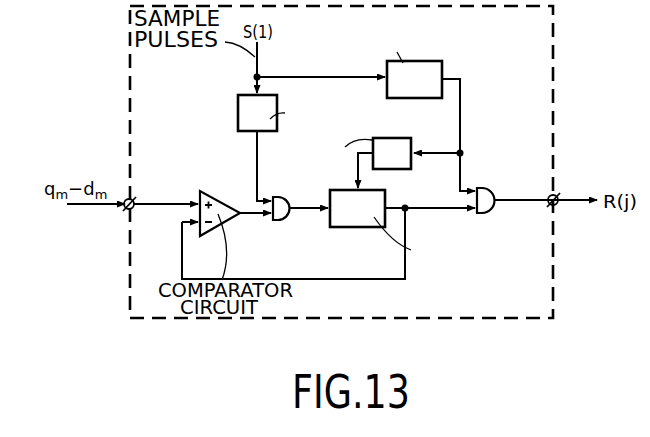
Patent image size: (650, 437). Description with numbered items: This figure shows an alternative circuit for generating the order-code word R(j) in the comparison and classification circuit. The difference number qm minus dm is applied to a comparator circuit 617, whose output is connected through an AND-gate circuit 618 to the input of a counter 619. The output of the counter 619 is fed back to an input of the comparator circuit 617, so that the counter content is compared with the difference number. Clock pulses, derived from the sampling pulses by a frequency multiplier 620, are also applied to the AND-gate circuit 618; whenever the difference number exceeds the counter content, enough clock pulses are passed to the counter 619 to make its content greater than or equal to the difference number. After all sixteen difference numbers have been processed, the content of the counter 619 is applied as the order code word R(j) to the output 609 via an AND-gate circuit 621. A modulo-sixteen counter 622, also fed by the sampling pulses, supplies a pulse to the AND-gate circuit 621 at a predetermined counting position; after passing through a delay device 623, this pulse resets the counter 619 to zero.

The output 609 is at (549, 196).
The comparator circuit 617 is at (229, 170).
The AND-gate circuit 618 is at (282, 222).
The counter 619 is at (362, 228).
The frequency multiplier 620 is at (236, 112).
The AND-gate circuit 621 is at (487, 214).
The modulo-16 counter 622 is at (446, 65).
The delay device 623 is at (398, 170).